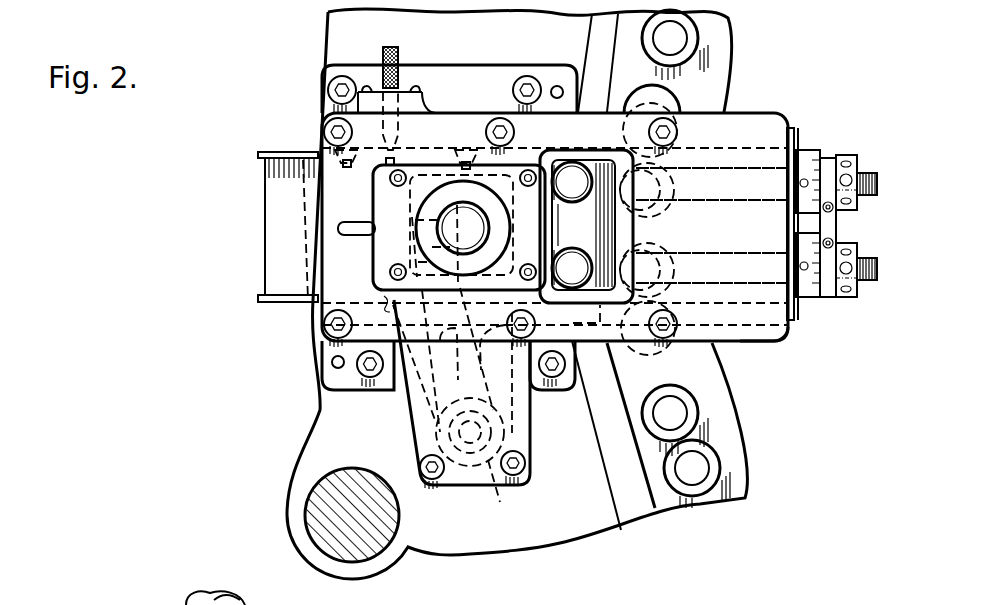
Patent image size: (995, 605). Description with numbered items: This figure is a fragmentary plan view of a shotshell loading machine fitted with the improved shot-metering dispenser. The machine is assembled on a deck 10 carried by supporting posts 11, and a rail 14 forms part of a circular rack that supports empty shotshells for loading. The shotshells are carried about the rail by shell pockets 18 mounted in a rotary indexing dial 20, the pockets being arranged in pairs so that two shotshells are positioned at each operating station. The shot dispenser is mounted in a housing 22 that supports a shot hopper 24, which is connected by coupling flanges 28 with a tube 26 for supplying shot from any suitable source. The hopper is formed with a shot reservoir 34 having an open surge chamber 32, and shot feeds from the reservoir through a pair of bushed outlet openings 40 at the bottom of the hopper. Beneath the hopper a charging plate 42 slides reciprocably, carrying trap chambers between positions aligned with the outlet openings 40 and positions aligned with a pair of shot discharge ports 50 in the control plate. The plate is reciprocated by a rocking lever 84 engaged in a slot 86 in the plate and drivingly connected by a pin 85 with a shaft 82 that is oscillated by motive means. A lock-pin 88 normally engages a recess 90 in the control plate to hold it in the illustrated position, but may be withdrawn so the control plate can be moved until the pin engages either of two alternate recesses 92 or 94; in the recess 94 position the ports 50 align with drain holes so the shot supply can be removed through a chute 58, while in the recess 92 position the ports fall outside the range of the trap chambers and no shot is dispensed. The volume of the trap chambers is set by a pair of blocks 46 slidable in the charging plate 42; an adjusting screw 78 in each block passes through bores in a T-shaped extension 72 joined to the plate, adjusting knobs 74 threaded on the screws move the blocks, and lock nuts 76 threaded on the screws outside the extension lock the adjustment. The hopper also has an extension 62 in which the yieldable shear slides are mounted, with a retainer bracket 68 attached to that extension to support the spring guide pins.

The deck 10 is at (318, 408).
The supporting post 11 is at (392, 552).
The rail 14 is at (605, 458).
The shell pocket 18 is at (677, 390).
The rotary indexing dial 20 is at (648, 484).
The housing 22 is at (455, 487).
The shot hopper 24 is at (410, 198).
The tube 26 is at (490, 227).
The coupling flange 28 is at (374, 189).
The surge chamber 32 is at (635, 229).
The shot reservoir 34 is at (612, 237).
The bushed outlet opening 40 is at (574, 202).
The charging plate 42 is at (752, 143).
The block 46 is at (727, 256).
The shot discharge port 50 is at (672, 218).
The chute 58 is at (265, 258).
The hopper extension 62 is at (775, 344).
The retainer bracket 68 is at (796, 128).
The T-shaped extension 72 is at (828, 298).
The adjusting knob 74 is at (816, 149).
The lock nut 76 is at (852, 158).
The adjusting screw 78 is at (866, 257).
The shaft 82 is at (503, 497).
The rocking lever 84 is at (425, 392).
The pin 85 is at (505, 433).
The slot 86 is at (386, 303).
The lock-pin 88 is at (399, 58).
The recess 90 is at (409, 153).
The recess 92 is at (311, 152).
The recess 94 is at (482, 153).